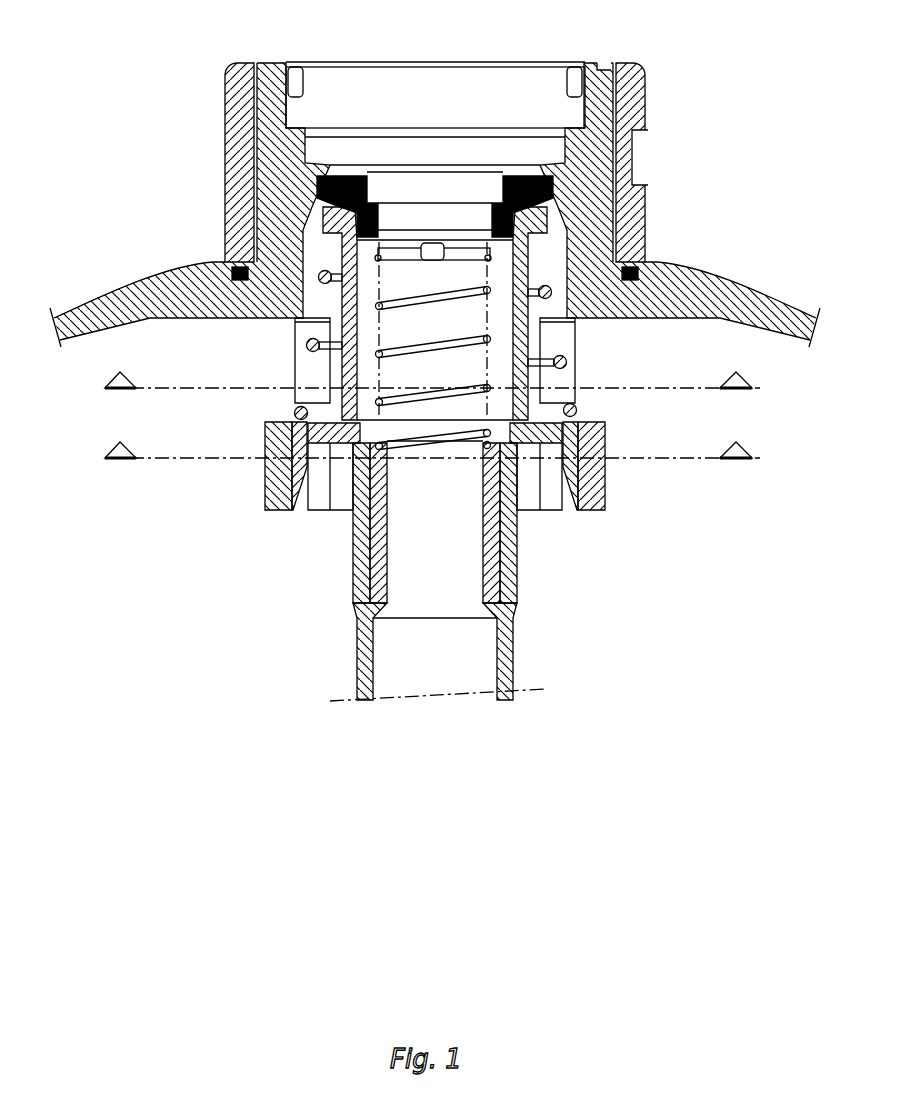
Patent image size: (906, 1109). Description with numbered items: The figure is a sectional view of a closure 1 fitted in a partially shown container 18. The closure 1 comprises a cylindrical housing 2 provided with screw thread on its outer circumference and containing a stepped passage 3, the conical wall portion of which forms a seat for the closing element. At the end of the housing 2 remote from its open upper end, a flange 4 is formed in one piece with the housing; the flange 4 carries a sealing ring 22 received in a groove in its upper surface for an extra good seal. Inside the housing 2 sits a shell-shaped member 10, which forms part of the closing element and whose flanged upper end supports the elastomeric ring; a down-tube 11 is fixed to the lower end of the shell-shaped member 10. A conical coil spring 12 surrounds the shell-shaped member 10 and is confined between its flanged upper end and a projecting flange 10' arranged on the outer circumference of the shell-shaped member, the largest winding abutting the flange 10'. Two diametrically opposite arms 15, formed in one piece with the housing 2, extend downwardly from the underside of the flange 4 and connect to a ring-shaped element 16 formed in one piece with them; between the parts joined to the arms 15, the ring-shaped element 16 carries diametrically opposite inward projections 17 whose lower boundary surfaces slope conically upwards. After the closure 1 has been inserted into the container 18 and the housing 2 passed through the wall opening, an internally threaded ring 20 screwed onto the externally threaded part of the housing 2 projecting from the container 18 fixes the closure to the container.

The closure 1 is at (435, 356).
The cylindrical housing 2 is at (593, 67).
The stepped passage 3 is at (381, 75).
The flange 4 is at (176, 320).
The shell-shaped member 10 is at (406, 328).
The projecting flange 10' is at (489, 431).
The down-tube 11 is at (356, 673).
The coil spring 12 is at (568, 367).
The arms 15 is at (295, 336).
The ring-shaped element 16 is at (265, 482).
The projections 17 is at (318, 487).
The container 18 is at (760, 305).
The internally threaded ring 20 is at (648, 82).
The sealing ring 22 is at (645, 265).